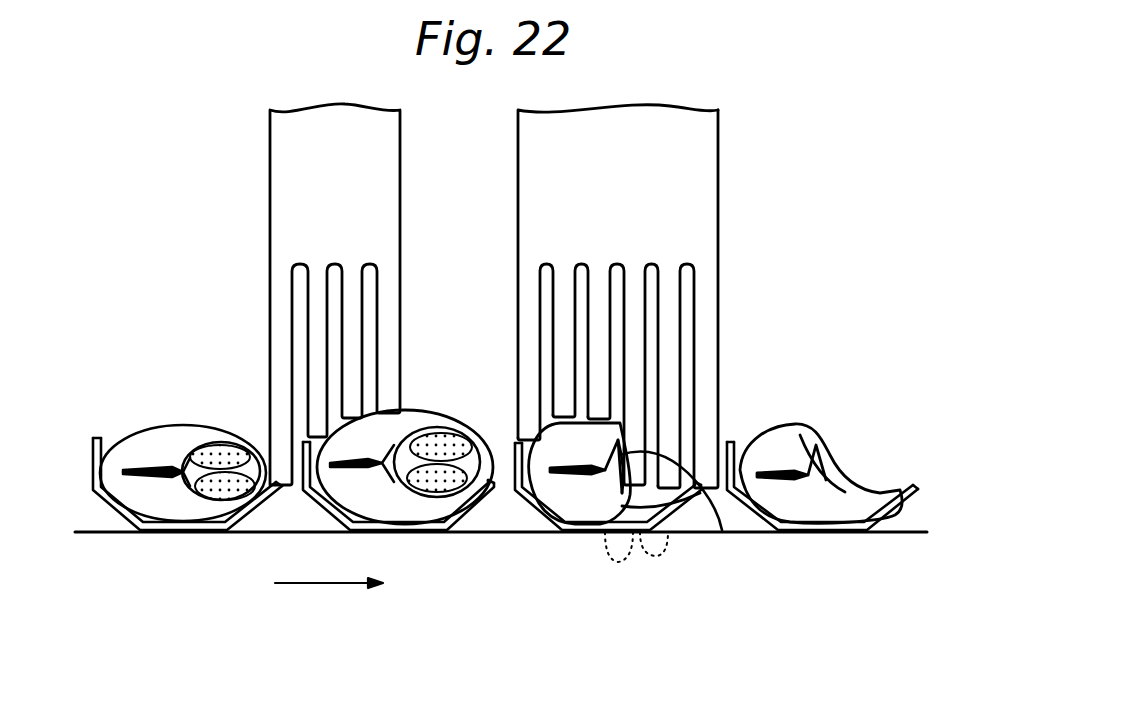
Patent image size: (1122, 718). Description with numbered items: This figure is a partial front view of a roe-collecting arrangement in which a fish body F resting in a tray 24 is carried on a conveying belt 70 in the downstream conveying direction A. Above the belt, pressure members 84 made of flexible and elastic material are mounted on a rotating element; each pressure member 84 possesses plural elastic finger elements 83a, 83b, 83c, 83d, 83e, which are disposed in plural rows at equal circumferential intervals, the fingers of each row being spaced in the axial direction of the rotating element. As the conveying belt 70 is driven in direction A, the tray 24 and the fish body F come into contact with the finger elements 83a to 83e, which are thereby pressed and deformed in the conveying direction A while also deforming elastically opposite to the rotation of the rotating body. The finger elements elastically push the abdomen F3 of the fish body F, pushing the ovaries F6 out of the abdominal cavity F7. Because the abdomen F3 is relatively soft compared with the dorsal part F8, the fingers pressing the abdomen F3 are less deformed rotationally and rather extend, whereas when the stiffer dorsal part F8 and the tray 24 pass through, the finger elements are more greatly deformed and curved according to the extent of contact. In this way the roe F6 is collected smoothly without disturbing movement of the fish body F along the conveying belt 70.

The pressure member 84 is at (693, 182).
The elastic finger element 83a is at (703, 292).
The elastic finger element 83b is at (667, 315).
The elastic finger element 83c is at (633, 335).
The elastic finger element 83d is at (597, 350).
The elastic finger element 83e is at (563, 297).
The tray 24 is at (206, 532).
The conveying belt 70 is at (755, 532).
The fish body F is at (400, 498).
The abdomen F3 is at (722, 530).
The ovaries F6 is at (450, 472).
The abdominal cavity F7 is at (478, 455).
The dorsal part F8 is at (323, 492).
The downstream conveying direction A is at (332, 586).